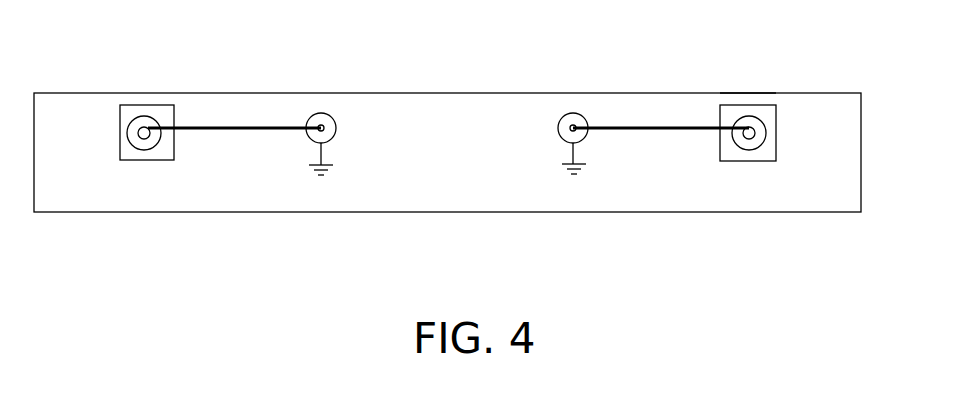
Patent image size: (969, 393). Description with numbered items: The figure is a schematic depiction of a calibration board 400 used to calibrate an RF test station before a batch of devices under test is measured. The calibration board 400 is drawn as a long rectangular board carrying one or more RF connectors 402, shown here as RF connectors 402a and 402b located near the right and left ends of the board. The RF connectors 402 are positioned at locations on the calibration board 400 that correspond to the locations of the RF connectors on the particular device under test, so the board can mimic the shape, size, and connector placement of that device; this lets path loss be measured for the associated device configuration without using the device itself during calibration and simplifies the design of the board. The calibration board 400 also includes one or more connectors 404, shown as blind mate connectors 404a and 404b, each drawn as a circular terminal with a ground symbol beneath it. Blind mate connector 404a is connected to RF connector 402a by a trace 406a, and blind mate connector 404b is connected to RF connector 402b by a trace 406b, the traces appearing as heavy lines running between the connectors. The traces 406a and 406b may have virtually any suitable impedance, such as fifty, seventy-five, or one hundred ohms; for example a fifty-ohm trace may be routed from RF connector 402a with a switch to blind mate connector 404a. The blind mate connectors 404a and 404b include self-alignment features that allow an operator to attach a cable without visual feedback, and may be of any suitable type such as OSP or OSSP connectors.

The calibration board 400 is at (658, 212).
The RF connectors 402 is at (769, 80).
The RF connector 402a is at (720, 105).
The RF connector 402b is at (120, 105).
The connectors 404 is at (580, 96).
The blind mate connector 404a is at (565, 118).
The blind mate connector 404b is at (317, 125).
The trace 406a is at (670, 130).
The trace 406b is at (230, 130).